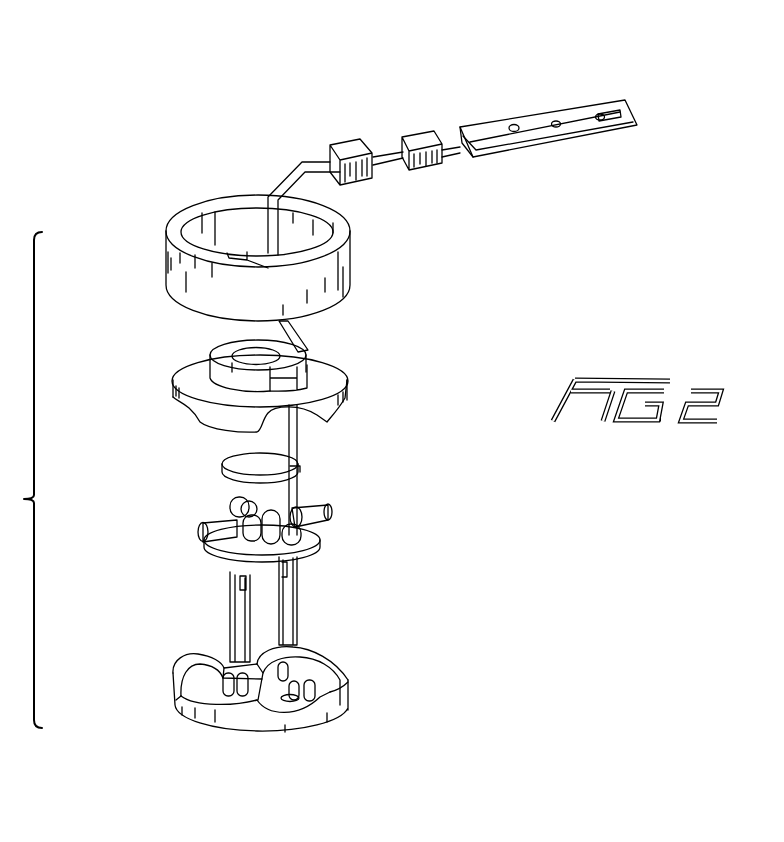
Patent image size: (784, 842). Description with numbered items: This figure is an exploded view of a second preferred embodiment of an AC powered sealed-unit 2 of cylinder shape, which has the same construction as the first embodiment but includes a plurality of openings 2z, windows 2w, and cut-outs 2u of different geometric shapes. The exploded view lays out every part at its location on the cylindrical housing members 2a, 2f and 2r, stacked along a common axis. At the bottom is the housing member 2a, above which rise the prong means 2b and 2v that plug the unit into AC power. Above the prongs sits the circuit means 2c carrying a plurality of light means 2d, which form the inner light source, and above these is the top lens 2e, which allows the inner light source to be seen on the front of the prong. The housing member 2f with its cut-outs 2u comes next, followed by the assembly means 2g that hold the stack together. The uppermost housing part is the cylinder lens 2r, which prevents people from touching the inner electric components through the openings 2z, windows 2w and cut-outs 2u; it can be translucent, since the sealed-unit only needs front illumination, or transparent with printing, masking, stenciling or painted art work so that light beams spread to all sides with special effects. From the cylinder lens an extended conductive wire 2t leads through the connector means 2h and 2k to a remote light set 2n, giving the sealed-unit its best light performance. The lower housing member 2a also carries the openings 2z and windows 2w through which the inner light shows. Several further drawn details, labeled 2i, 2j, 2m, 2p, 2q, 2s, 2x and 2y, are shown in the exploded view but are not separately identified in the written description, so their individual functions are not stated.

The AC powered sealed-unit 2 is at (24, 480).
The cylindrical housing member 2a is at (245, 718).
The prong means 2b is at (298, 593).
The circuit means 2c is at (310, 541).
The light means 2d is at (327, 511).
The top lens 2e is at (247, 467).
The cylindrical housing member 2f is at (334, 401).
The assembly means 2g is at (337, 361).
The connector means 2h is at (352, 148).
The arm 2i is at (292, 174).
The plate 2j is at (470, 128).
The connector means 2k is at (420, 138).
The holes 2m is at (600, 117).
The remote light set 2n is at (620, 122).
The shaft 2p is at (387, 161).
The ring 2q is at (202, 210).
The cylinder lens 2r is at (187, 278).
The notch 2s is at (348, 256).
The extended conductive wire 2t is at (300, 332).
The cut-outs 2u is at (178, 403).
The prong means 2v is at (229, 595).
The windows 2w is at (333, 664).
The pins 2x is at (295, 698).
The pins 2y is at (225, 682).
The openings 2z is at (223, 665).